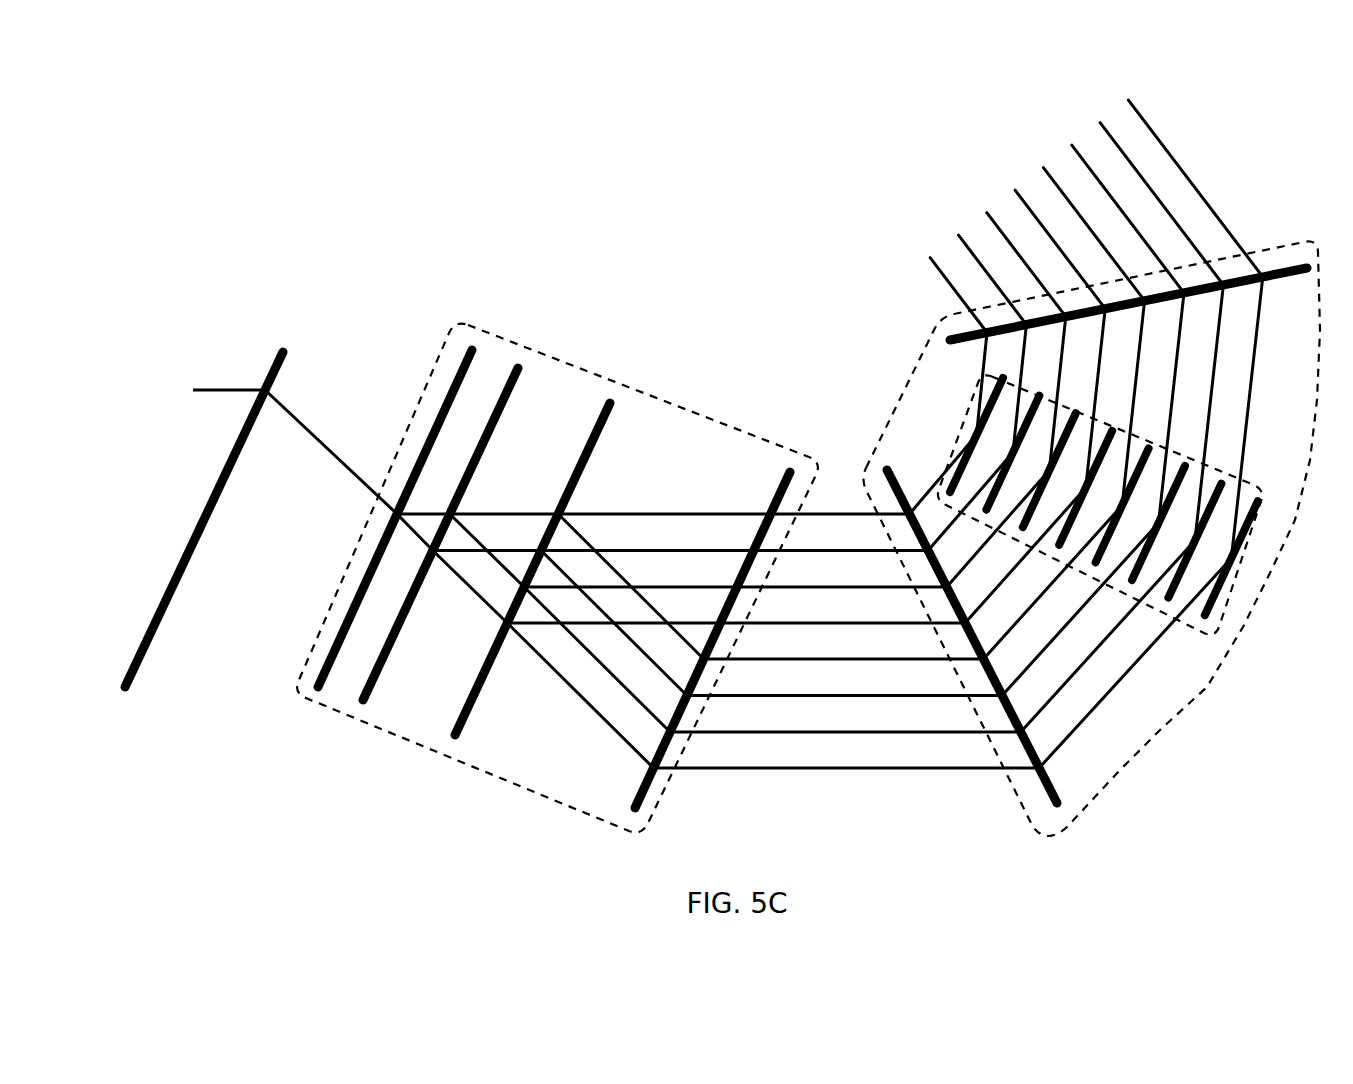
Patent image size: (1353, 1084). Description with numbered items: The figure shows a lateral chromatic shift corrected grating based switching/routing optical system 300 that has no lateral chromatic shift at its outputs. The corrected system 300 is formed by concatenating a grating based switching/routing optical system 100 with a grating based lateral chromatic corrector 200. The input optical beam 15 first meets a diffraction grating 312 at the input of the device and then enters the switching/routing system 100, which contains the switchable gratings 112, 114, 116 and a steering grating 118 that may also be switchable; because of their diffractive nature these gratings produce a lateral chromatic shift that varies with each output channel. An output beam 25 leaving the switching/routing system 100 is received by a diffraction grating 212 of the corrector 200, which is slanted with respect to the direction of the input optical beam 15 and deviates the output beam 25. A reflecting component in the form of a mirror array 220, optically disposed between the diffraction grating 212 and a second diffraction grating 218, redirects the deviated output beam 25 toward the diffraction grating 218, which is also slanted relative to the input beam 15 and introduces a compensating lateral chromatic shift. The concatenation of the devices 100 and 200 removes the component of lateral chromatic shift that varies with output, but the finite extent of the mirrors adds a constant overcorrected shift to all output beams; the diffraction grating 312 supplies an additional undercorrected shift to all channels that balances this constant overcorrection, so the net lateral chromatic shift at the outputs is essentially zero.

The input optical beam 15 is at (225, 390).
The output beam 25 is at (832, 623).
The grating based switching/routing optical system 100 is at (476, 772).
The switchable grating 112 is at (464, 362).
The switchable grating 114 is at (517, 372).
The switchable grating 116 is at (609, 405).
The steering grating 118 is at (789, 476).
The grating based lateral chromatic corrector 200 is at (1152, 740).
The diffraction grating 212 is at (885, 480).
The diffraction grating 218 is at (958, 344).
The mirror array 220 is at (1247, 578).
The lateral chromatic shift corrected grating based switching/routing optical system 300 is at (184, 843).
The diffraction grating 312 is at (284, 366).